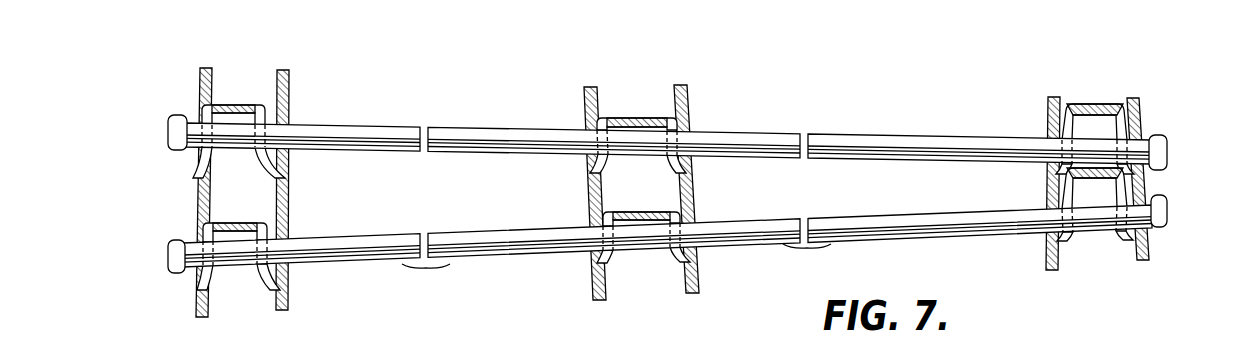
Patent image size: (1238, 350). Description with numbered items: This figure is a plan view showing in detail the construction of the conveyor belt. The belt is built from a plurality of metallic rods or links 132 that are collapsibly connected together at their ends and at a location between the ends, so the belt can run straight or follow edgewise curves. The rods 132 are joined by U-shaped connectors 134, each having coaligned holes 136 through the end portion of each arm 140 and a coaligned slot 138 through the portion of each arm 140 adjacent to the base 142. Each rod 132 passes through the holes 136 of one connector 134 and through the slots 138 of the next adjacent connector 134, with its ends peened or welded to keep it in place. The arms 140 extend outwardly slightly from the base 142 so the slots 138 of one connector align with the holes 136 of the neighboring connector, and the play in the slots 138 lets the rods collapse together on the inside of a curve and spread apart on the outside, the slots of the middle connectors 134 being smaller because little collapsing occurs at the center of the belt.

The rod 132 is at (470, 128).
The U-shaped connector 134 is at (197, 91).
The hole 136 is at (583, 222).
The slot 138 is at (672, 163).
The arm 140 is at (693, 188).
The base 142 is at (237, 103).